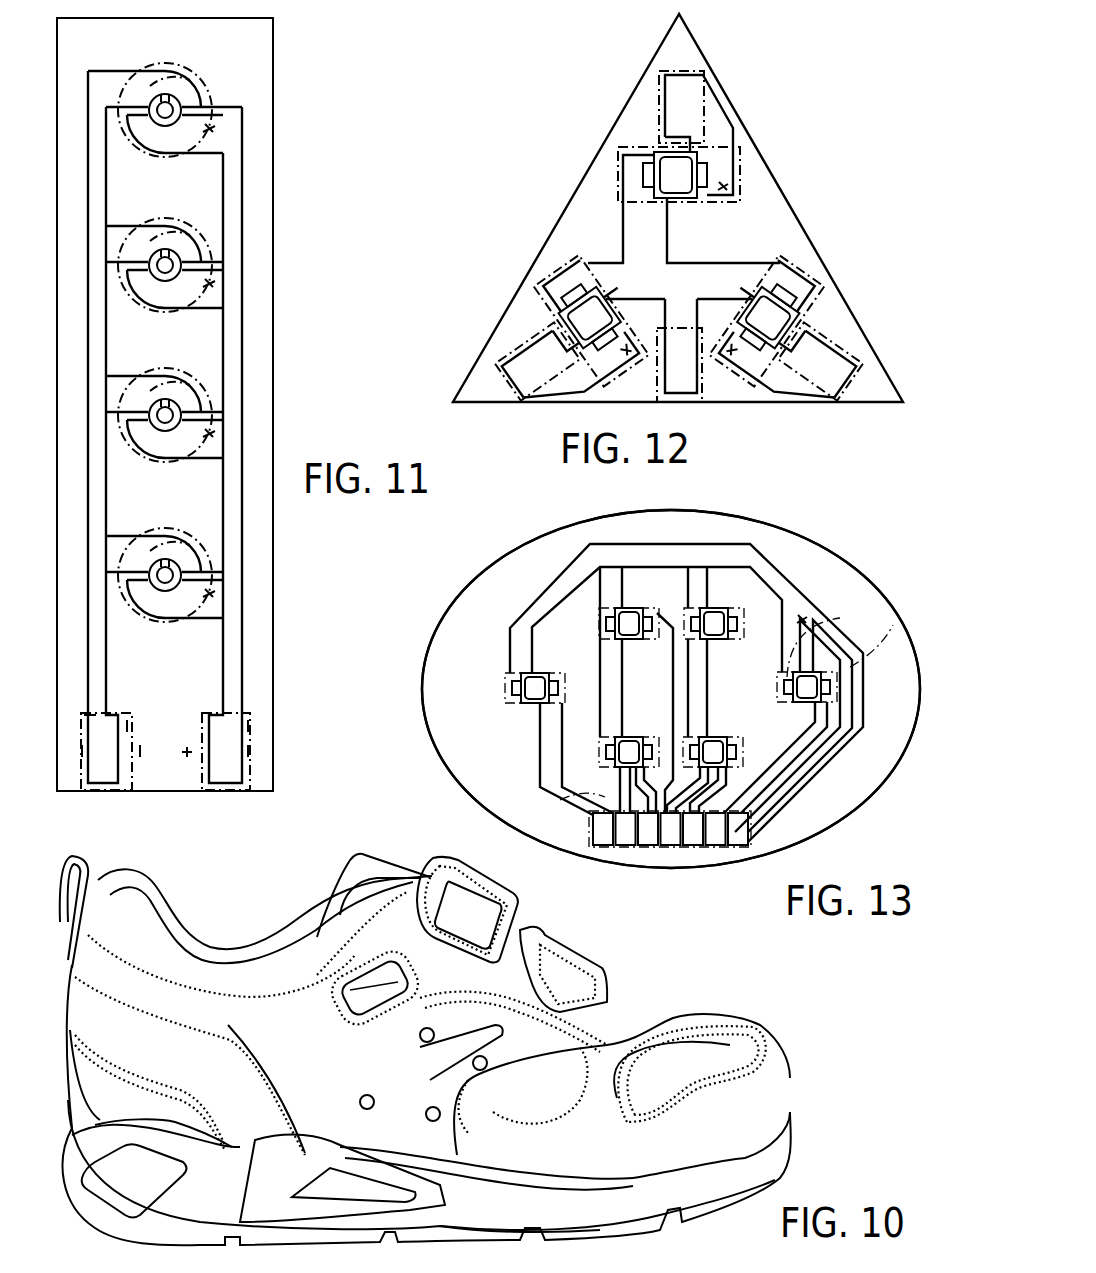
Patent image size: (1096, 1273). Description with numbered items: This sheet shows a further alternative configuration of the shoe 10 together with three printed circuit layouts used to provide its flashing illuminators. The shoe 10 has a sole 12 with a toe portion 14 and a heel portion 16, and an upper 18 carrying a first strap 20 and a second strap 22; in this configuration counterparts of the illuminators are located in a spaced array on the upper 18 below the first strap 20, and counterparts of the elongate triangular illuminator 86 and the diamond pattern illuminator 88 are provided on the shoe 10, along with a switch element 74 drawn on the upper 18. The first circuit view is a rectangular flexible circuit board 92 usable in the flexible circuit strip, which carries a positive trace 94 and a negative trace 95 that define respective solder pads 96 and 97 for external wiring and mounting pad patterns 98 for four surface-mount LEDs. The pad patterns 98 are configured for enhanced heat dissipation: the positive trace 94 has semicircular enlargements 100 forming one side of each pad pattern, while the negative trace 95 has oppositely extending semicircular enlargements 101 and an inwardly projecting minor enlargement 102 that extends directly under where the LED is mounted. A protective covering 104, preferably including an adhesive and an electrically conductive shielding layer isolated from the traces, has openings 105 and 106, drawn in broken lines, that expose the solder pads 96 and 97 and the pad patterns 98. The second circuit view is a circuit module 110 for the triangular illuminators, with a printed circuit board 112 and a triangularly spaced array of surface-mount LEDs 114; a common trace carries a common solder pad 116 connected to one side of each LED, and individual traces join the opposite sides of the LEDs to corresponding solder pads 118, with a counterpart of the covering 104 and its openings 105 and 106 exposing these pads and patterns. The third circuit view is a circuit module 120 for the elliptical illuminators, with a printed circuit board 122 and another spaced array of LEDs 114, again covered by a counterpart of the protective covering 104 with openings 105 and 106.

In FIG. 11, the rectangular flexible circuit board 92 is at (325, 514).
In FIG. 11, the positive trace 94 is at (243, 677).
In FIG. 11, the negative trace 95 is at (107, 690).
In FIG. 11, the solder pad 96 is at (245, 753).
In FIG. 11, the solder pad 97 is at (125, 738).
In FIG. 11, the mounting pad pattern 98 is at (282, 70).
In FIG. 11, the semicircular enlargement 100 is at (153, 310).
In FIG. 11, the semicircular enlargement 101 is at (206, 246).
In FIG. 11, the minor enlargement 102 is at (158, 274).
In FIG. 11, the protective covering 104 is at (178, 496).
In FIG. 12, the protective covering 104 is at (618, 252).
In FIG. 13, the protective covering 104 is at (528, 596).
In FIG. 11, the opening 105 is at (203, 795).
In FIG. 12, the opening 105 is at (510, 332).
In FIG. 13, the opening 105 is at (560, 800).
In FIG. 11, the opening 106 is at (213, 128).
In FIG. 12, the opening 106 is at (730, 175).
In FIG. 13, the opening 106 is at (812, 620).
In FIG. 13, the circuit module 110 is at (815, 853).
In FIG. 12, the printed circuit board 112 is at (817, 243).
In FIG. 13, the printed circuit board 112 is at (880, 790).
In FIG. 12, the surface-mount LED 114 is at (707, 163).
In FIG. 13, the surface-mount LED 114 is at (716, 606).
In FIG. 12, the common solder pad 116 is at (623, 227).
In FIG. 13, the common solder pad 116 is at (800, 597).
In FIG. 12, the solder pad 118 is at (690, 402).
In FIG. 13, the solder pad 118 is at (740, 848).
In FIG. 12, the circuit module 120 is at (717, 100).
In FIG. 13, the circuit module 120 is at (750, 610).
In FIG. 12, the printed circuit board 122 is at (663, 100).
In FIG. 13, the printed circuit board 122 is at (673, 848).
In FIG. 10, the shoe 10 is at (822, 1112).
In FIG. 10, the sole 12 is at (445, 1238).
In FIG. 10, the toe portion 14 is at (727, 1192).
In FIG. 10, the heel portion 16 is at (262, 1240).
In FIG. 10, the upper 18 is at (675, 1018).
In FIG. 10, the first strap 20 is at (516, 908).
In FIG. 10, the second strap 22 is at (605, 970).
In FIG. 10, the switch 74 is at (348, 1018).
In FIG. 10, the elongate triangular illuminator 86 is at (359, 1197).
In FIG. 10, the diamond pattern illuminator 88 is at (148, 1192).